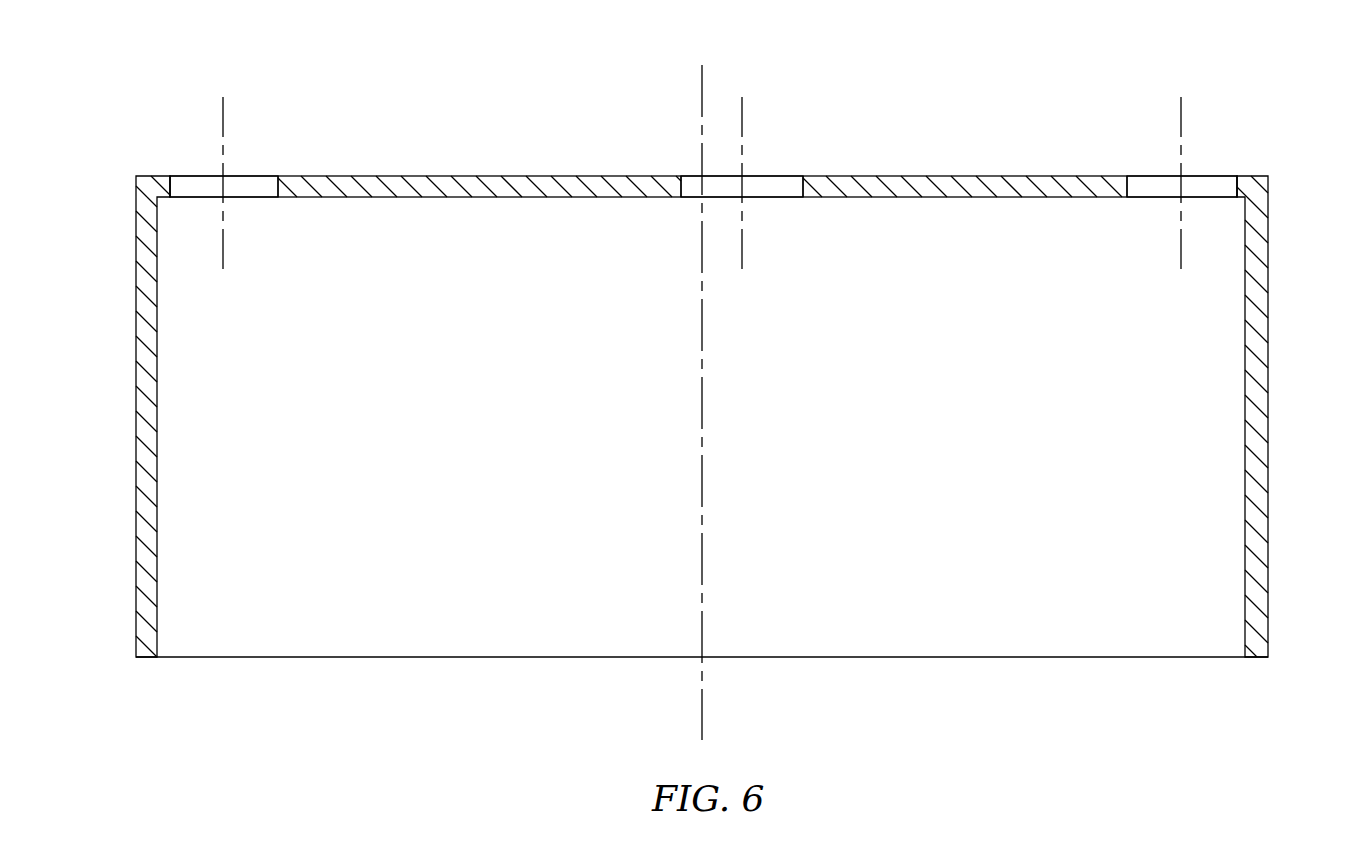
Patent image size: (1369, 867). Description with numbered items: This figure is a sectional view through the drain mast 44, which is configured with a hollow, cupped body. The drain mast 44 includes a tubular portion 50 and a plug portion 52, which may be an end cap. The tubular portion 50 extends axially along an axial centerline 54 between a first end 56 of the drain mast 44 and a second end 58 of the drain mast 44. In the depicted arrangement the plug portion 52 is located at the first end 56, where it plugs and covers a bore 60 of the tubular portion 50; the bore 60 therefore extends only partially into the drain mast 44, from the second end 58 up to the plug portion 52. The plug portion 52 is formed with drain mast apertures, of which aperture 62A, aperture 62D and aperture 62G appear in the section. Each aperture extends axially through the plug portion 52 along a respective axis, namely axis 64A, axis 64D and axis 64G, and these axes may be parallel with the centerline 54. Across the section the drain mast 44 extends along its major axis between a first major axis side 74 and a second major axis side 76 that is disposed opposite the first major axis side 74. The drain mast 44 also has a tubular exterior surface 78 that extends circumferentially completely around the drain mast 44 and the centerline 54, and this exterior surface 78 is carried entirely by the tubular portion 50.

The drain mast 44 is at (1092, 98).
The tubular portion 50 is at (704, 410).
The plug portion 52 is at (910, 176).
The axial centerline 54 is at (702, 728).
The first end 56 is at (331, 176).
The second end 58 is at (305, 658).
The bore 60 is at (549, 447).
The drain mast aperture 62A is at (192, 180).
The drain mast aperture 62D is at (773, 183).
The drain mast aperture 62G is at (1220, 183).
The aperture axis 64A is at (223, 258).
The aperture axis 64D is at (742, 262).
The aperture axis 64G is at (1181, 270).
The first major axis side 74 is at (136, 248).
The second major axis side 76 is at (1268, 250).
The tubular exterior surface 78 is at (136, 443).